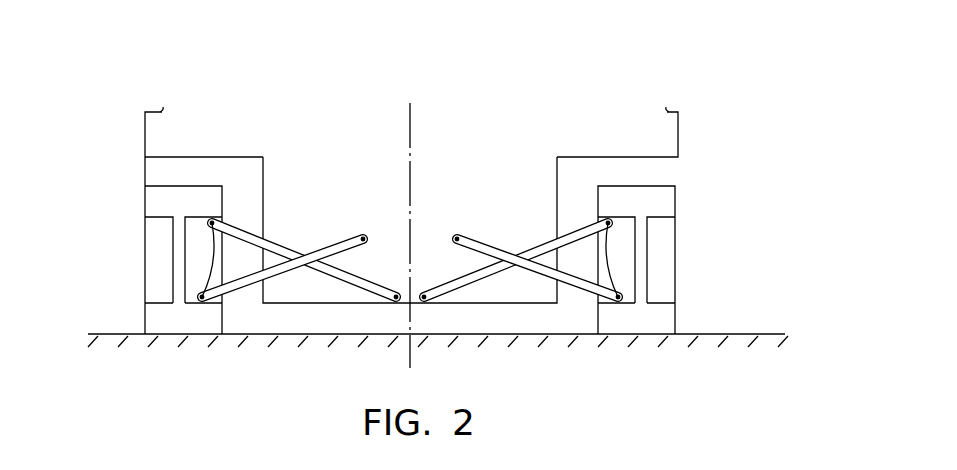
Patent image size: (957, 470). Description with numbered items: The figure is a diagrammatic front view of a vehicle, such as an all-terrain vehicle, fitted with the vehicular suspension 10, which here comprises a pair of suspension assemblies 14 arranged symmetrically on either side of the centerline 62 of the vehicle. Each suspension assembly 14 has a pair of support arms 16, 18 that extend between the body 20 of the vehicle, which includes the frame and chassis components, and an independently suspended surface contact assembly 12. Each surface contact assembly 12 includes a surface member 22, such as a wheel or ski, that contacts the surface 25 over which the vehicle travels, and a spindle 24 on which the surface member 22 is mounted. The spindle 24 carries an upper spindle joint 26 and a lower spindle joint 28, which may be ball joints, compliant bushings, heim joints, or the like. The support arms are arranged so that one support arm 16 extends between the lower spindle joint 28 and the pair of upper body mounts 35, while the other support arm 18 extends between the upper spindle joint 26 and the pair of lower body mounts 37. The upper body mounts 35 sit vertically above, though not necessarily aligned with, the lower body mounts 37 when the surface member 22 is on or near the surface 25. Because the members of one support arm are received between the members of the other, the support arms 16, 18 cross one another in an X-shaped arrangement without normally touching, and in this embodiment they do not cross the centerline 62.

The vehicular suspension 10 is at (628, 98).
The surface contact assembly 12 is at (124, 256).
The suspension assembly 14 is at (300, 192).
The support arm 16 is at (328, 243).
The support arm 18 is at (367, 280).
The body of the vehicle 20 is at (177, 137).
The surface member 22 is at (168, 318).
The spindle 24 is at (193, 258).
The surface 25 is at (135, 336).
The upper spindle joint 26 is at (212, 223).
The lower spindle joint 28 is at (202, 298).
The upper body mounts 35 is at (457, 239).
The lower body mounts 37 is at (424, 301).
The centerline of the vehicle 62 is at (410, 137).